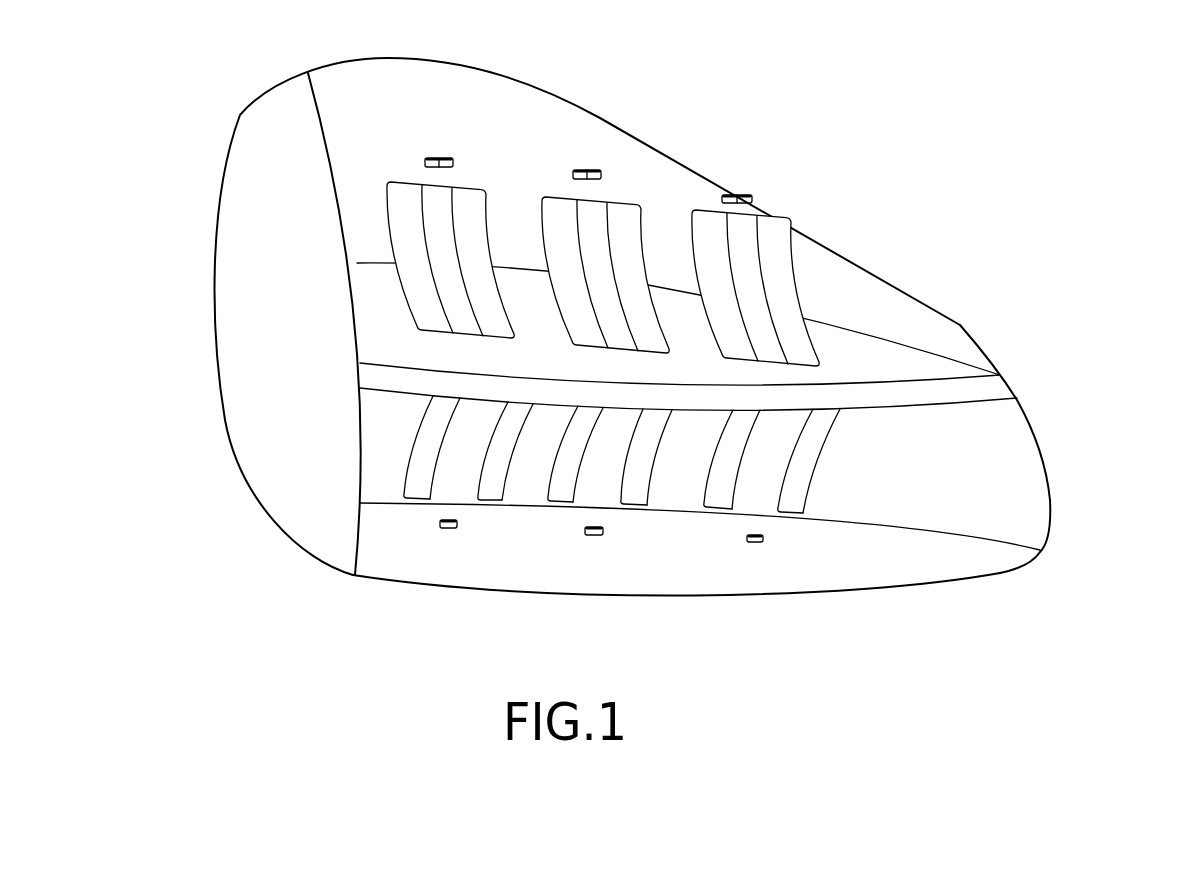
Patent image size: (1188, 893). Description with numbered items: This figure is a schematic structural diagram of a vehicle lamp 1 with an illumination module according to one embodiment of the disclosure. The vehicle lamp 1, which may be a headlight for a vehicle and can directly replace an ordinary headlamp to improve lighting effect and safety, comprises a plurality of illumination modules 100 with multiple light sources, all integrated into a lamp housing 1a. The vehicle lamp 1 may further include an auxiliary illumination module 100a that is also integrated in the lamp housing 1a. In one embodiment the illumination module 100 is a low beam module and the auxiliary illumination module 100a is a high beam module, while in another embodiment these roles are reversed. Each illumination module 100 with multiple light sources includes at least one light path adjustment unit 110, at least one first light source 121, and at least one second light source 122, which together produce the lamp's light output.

The vehicle lamp 1 is at (1018, 117).
The lamp housing 1a is at (358, 322).
The illumination module 100 is at (982, 347).
The auxiliary illumination module 100a is at (1020, 463).
The light path adjustment unit 110 is at (782, 262).
The first light source 121 is at (733, 194).
The second light source 122 is at (740, 197).